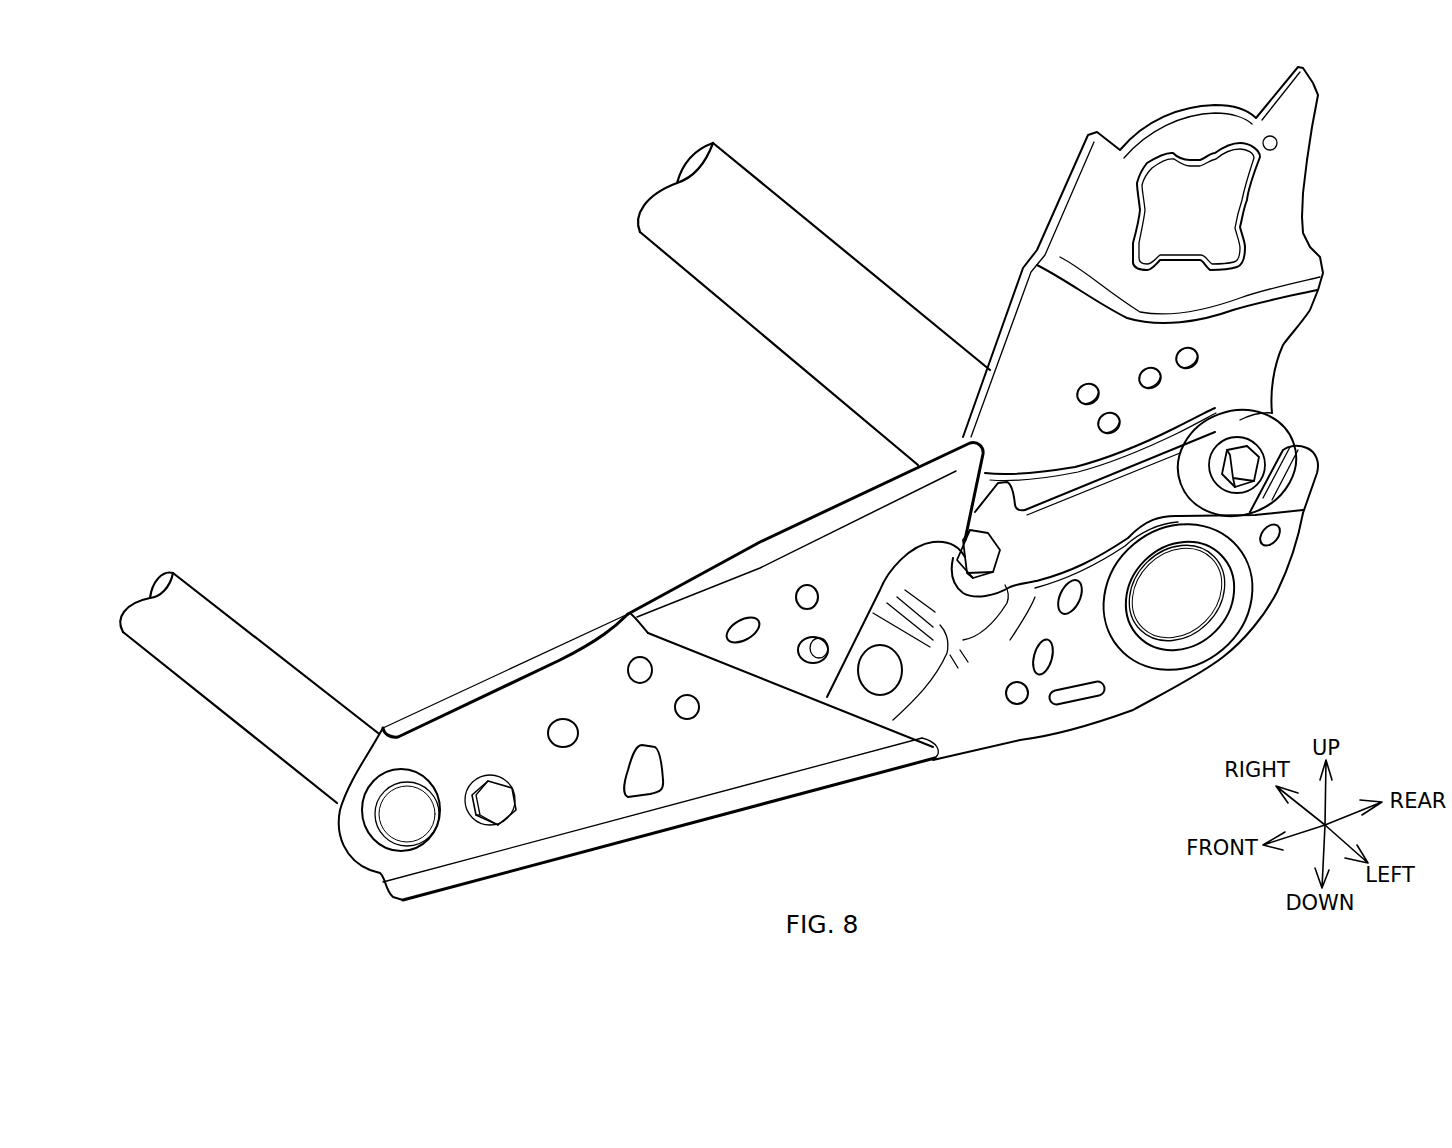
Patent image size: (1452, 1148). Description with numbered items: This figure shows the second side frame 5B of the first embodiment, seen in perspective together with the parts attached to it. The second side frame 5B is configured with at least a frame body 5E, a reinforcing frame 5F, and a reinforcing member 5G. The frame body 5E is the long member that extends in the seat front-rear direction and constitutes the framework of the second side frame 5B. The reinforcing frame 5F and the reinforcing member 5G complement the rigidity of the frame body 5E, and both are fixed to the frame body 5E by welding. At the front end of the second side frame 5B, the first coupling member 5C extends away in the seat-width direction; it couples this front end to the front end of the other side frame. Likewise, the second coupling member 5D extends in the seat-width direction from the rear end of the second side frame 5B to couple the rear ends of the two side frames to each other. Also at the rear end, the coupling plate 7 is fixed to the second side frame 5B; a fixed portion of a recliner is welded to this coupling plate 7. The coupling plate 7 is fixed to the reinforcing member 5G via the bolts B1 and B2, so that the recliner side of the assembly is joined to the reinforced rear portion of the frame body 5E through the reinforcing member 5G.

The second side frame 5B is at (668, 556).
The first coupling member 5C is at (252, 652).
The second coupling member 5D is at (831, 247).
The frame body 5E is at (733, 762).
The reinforcing frame 5F is at (988, 718).
The reinforcing member 5G is at (1178, 458).
The coupling plate 7 is at (1292, 315).
The bolt B1 is at (980, 557).
The bolt B2 is at (1245, 473).